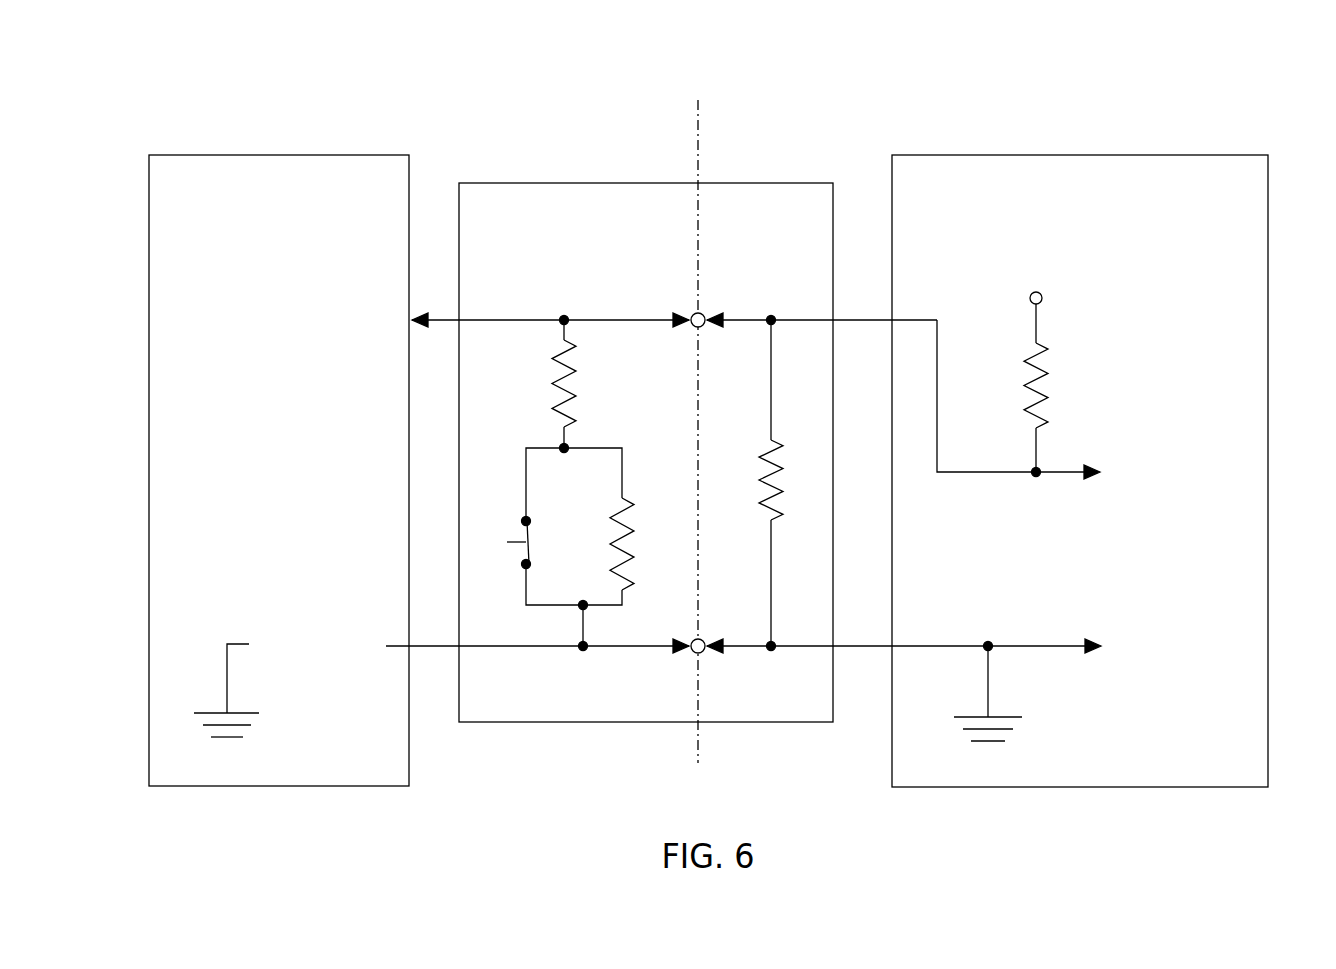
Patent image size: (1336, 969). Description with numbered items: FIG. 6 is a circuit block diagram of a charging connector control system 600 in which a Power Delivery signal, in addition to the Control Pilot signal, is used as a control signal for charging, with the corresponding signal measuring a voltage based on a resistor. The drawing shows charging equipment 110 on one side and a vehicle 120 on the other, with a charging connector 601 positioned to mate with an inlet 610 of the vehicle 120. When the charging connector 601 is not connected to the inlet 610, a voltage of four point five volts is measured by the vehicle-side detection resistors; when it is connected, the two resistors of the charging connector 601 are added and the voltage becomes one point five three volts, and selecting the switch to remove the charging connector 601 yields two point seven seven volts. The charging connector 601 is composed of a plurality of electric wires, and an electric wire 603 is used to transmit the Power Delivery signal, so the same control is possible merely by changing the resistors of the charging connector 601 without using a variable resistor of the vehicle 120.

The charging connector control system 600 is at (220, 110).
The charging equipment 110 is at (280, 155).
The vehicle 120 is at (1078, 155).
The charging connector 601 is at (607, 722).
The inlet 610 is at (793, 722).
The electric wire 603 is at (705, 327).